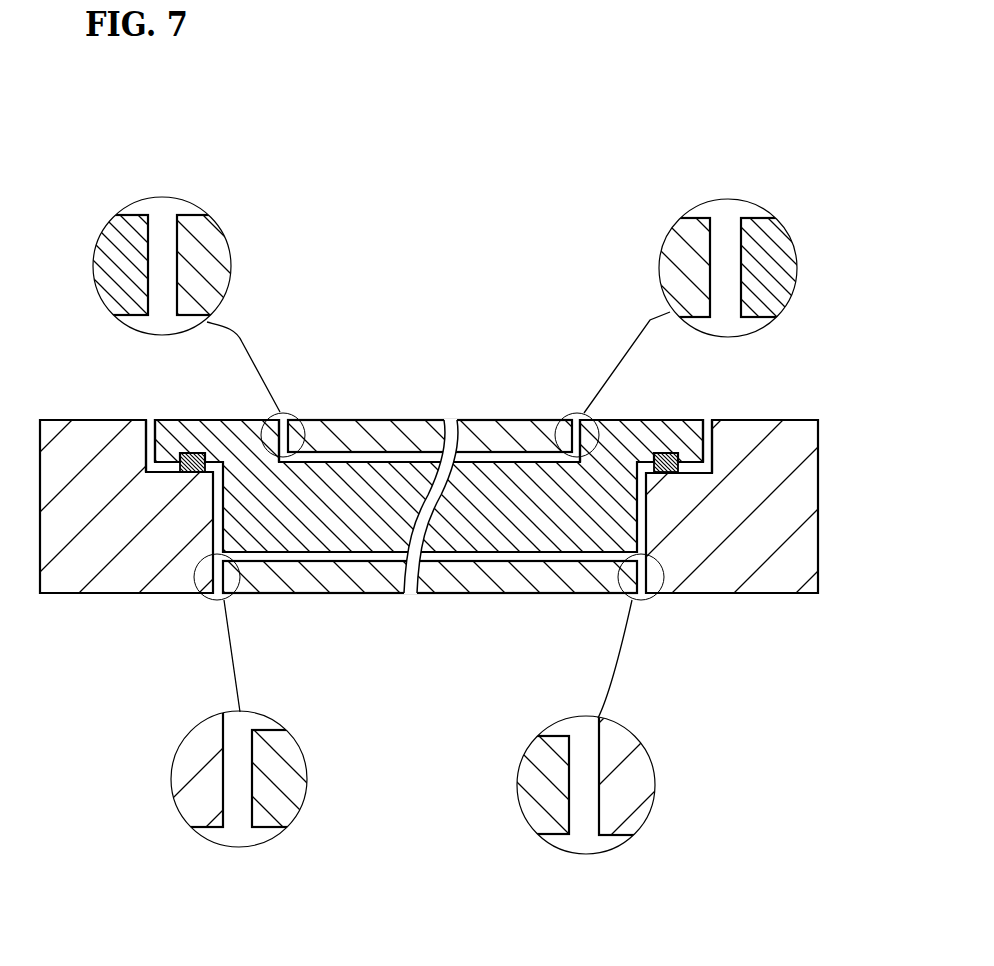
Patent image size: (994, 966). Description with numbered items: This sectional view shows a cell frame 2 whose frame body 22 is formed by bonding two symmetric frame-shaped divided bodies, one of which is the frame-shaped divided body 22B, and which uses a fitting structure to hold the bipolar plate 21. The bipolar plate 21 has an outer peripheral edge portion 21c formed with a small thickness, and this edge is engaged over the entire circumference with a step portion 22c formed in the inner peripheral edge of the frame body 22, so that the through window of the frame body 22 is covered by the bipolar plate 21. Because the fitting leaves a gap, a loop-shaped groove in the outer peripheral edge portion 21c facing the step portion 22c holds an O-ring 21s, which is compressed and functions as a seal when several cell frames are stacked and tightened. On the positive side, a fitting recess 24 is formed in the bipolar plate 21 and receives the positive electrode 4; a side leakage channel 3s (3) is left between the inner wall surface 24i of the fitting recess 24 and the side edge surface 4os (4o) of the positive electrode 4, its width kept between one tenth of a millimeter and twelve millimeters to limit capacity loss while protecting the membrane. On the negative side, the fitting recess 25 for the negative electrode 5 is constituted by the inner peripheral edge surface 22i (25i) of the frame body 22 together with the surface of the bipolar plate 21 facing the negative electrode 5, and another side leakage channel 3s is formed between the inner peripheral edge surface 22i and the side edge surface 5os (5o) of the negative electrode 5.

The cell frame 2 is at (435, 414).
The bipolar plate 21 is at (429, 526).
The frame body 22 is at (435, 493).
The frame-shaped divided body 22B is at (777, 583).
The gap 3 is at (432, 501).
The side leakage channel 3s is at (283, 408).
The positive electrode 4 is at (398, 420).
The outer edge of upper plate 4o is at (445, 214).
The side edge surface of the positive electrode 4os is at (178, 233).
The negative electrode 5 is at (372, 582).
The outer edge of lower plate 5o is at (409, 840).
The side edge surface of the negative electrode 5os is at (252, 815).
The fitting recess 24 is at (487, 446).
The inner wall surface of the fitting recess 24i is at (151, 236).
The fitting recess 25 is at (486, 568).
The inner surface of lower portion 25i is at (228, 816).
The inner peripheral edge surface of the frame body 22i is at (412, 816).
The step portion 22c is at (138, 418).
The outer peripheral edge portion 21c is at (198, 428).
The O-ring 21s is at (183, 452).